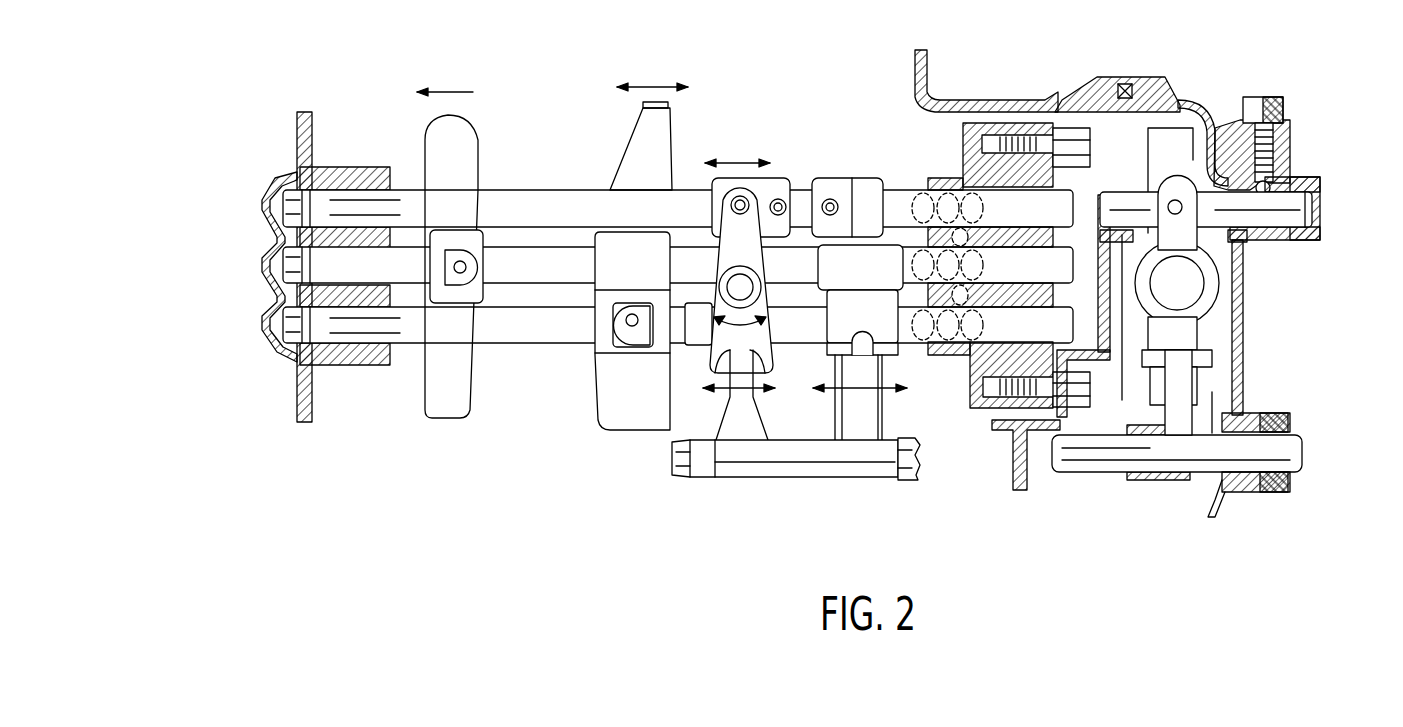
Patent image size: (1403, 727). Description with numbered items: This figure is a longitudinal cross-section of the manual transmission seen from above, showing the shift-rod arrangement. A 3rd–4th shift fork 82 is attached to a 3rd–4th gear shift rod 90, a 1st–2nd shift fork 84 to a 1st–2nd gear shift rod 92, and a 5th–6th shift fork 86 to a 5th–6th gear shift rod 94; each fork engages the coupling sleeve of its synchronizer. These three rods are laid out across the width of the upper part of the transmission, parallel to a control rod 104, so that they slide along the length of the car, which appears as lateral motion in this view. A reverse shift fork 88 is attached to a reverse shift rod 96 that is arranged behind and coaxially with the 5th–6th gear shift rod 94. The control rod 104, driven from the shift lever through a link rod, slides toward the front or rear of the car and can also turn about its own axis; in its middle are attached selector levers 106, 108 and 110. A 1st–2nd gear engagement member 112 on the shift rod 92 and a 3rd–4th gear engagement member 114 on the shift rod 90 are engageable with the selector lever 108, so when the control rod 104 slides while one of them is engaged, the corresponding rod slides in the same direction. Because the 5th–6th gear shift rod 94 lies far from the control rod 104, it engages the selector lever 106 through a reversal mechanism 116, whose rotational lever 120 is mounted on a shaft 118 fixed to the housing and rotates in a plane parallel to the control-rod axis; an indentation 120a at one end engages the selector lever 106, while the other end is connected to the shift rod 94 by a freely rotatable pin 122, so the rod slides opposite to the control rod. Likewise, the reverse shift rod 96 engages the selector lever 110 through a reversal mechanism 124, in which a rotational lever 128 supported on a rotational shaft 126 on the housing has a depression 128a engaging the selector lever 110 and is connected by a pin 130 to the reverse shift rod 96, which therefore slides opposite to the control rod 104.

The 3rd–4th shift fork 82 is at (466, 133).
The 1st–2nd shift fork 84 is at (640, 125).
The 5th–6th shift fork 86 is at (835, 408).
The reverse shift fork 88 is at (1172, 147).
The 3rd–4th gear shift rod 90 is at (558, 260).
The 1st–2nd gear shift rod 92 is at (537, 327).
The 5th–6th gear shift rod 94 is at (683, 197).
The reverse shift rod 96 is at (1320, 217).
The control rod 104 is at (912, 480).
The selector lever 106 is at (738, 402).
The selector lever 108 is at (863, 417).
The selector lever 110 is at (1183, 387).
The 1st–2nd gear engagement member 112 is at (885, 355).
The 3rd–4th gear engagement member 114 is at (863, 267).
The reversal mechanism 116 is at (751, 243).
The shaft 118 is at (745, 290).
The rotational lever 120 is at (757, 347).
The indentation 120a is at (713, 367).
The pin 122 is at (735, 207).
The reversal mechanism 124 is at (1225, 298).
The rotational shaft 126 is at (1180, 278).
The rotational lever 128 is at (1178, 322).
The depression 128a is at (1183, 338).
The pin 130 is at (1225, 190).